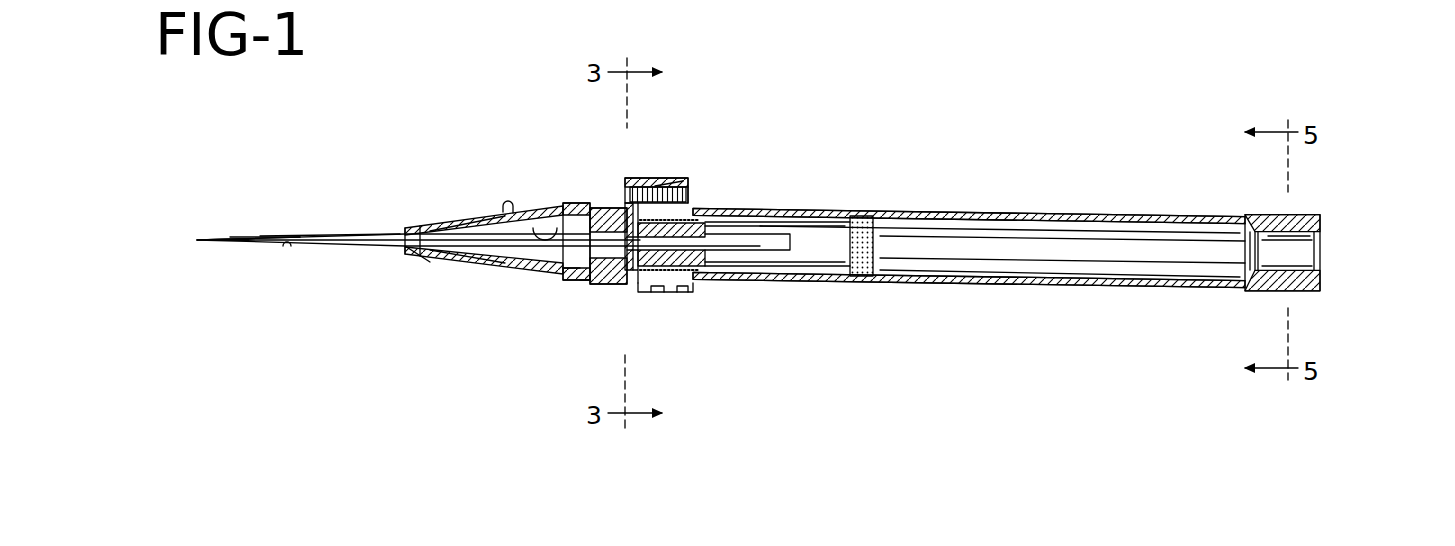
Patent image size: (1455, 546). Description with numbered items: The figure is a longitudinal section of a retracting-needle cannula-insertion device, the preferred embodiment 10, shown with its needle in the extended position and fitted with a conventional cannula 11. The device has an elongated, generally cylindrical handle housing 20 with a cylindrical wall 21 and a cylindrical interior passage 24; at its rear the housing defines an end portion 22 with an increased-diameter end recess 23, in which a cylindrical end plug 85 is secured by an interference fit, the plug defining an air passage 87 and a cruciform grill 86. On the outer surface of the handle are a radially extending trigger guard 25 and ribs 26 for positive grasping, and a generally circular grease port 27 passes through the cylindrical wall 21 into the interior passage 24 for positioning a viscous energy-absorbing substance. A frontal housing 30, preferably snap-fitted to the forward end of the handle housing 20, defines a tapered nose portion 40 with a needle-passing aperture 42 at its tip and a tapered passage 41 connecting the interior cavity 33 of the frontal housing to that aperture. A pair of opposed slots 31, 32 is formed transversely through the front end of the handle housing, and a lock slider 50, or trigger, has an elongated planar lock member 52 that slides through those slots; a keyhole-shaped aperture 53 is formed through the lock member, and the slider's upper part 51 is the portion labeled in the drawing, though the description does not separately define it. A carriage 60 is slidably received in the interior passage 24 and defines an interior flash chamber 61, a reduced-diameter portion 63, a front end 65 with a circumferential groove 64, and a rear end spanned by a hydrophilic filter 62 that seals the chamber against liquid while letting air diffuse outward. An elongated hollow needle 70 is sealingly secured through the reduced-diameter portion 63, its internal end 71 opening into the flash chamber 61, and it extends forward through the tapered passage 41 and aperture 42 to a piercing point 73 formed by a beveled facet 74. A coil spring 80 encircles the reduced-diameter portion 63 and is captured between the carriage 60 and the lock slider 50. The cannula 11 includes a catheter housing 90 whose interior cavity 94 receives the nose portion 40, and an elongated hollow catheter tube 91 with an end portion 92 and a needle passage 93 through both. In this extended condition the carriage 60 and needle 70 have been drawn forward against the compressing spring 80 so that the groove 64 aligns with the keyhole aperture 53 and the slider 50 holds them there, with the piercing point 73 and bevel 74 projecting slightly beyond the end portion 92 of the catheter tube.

The preferred embodiment 10 is at (995, 108).
The cannula 11 is at (428, 264).
The handle housing 20 is at (1058, 208).
The cylindrical wall 21 is at (1117, 216).
The end portion 22 is at (1322, 218).
The end recess 23 is at (1322, 232).
The cylindrical interior passage 24 is at (1055, 262).
The trigger guard 25 is at (702, 214).
The ribs 26 is at (672, 292).
The grease port 27 is at (686, 290).
The frontal housing 30 is at (612, 288).
The slot 31 is at (605, 208).
The slot 32 is at (640, 292).
The interior cavity 33 is at (574, 284).
The nose portion 40 is at (487, 266).
The tapered passage 41 is at (508, 203).
The needle-passing aperture 42 is at (478, 264).
The lock slider 50 is at (664, 180).
The cap top 51 is at (657, 182).
The planar lock member 52 is at (588, 286).
The keyhole-shaped aperture 53 is at (690, 190).
The carriage 60 is at (760, 228).
The interior flash chamber 61 is at (817, 230).
The hydrophilic filter 62 is at (907, 228).
The reduced-diameter portion 63 is at (695, 222).
The circumferential groove 64 is at (578, 203).
The front end 65 is at (558, 278).
The hollow needle 70 is at (316, 234).
The internal end 71 is at (820, 278).
The piercing point 73 is at (215, 241).
The beveled facet 74 is at (215, 238).
The coil spring 80 is at (700, 284).
The end plug 85 is at (1320, 264).
The grill 86 is at (1256, 256).
The air passage 87 is at (1272, 266).
The catheter housing 90 is at (440, 226).
The catheter tube 91 is at (290, 236).
The end portion 92 is at (260, 236).
The needle passage 93 is at (287, 248).
The interior cavity 94 is at (485, 220).